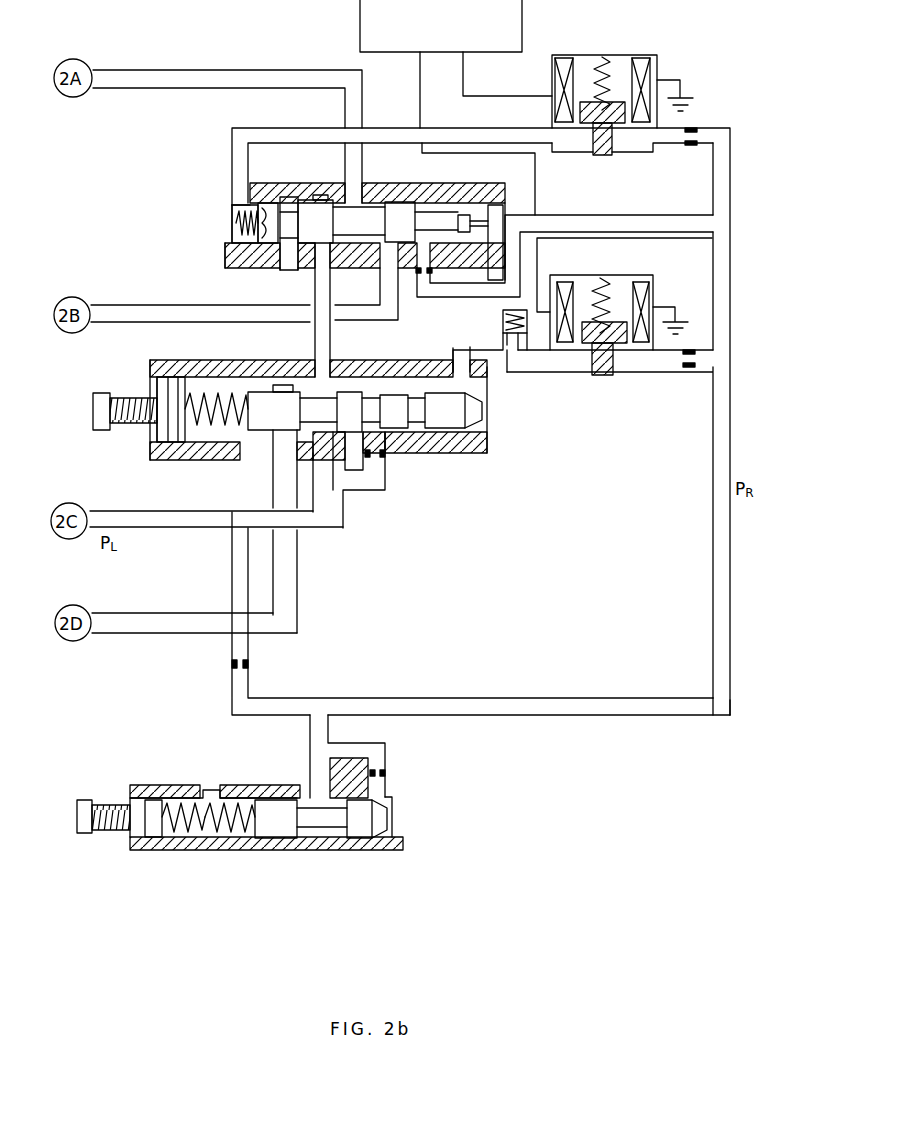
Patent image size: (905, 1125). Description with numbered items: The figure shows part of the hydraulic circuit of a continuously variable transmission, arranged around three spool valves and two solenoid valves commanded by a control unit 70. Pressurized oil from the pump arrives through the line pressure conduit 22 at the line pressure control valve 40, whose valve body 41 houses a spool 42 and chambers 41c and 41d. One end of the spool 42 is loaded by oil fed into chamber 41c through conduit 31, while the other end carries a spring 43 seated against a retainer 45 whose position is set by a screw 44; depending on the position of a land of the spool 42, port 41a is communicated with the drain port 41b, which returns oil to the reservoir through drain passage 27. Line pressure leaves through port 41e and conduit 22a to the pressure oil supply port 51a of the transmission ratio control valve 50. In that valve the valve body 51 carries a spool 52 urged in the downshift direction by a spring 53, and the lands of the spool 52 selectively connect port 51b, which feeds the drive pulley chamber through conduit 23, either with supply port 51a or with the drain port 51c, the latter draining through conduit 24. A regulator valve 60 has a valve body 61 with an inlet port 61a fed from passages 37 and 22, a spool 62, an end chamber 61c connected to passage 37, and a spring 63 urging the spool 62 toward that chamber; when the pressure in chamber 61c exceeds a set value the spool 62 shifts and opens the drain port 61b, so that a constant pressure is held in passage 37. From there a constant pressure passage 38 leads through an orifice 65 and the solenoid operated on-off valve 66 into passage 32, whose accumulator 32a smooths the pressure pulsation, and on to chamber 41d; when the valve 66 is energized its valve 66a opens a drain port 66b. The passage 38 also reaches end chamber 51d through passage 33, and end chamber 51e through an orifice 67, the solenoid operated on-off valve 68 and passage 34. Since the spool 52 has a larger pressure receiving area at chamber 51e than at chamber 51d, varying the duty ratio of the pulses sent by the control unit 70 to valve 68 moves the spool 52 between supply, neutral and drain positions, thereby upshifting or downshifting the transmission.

The control unit 70 is at (522, 22).
The conduit 23 is at (183, 70).
The passage 34 is at (461, 137).
The transmission ratio control valve 50 is at (474, 189).
The spring 53 is at (233, 208).
The end chamber 51e is at (237, 240).
The spool 52 is at (272, 202).
The port 51b is at (300, 194).
The pressure oil supply port 51a is at (290, 266).
The valve body 51 is at (397, 200).
The drain port 51c is at (366, 294).
The end chamber 51d is at (430, 277).
The conduit 24 is at (186, 312).
The conduit 22a is at (316, 296).
The solenoid operated on-off valve 68 is at (638, 55).
The orifice 67 is at (695, 125).
The passage 33 is at (618, 213).
The solenoid operated on-off valve 66 is at (648, 275).
The valve 66a is at (620, 345).
The drain port 66b is at (600, 377).
The orifice 65 is at (690, 370).
The passage 32 is at (525, 345).
The accumulator 32a is at (510, 362).
The line pressure control valve 40 is at (471, 475).
The screw 44 is at (100, 432).
The retainer 45 is at (172, 442).
The spring 43 is at (215, 385).
The port 41e is at (280, 388).
The spool 42 is at (349, 398).
The valve body 41 is at (437, 383).
The drain port 41b is at (283, 440).
The chamber 41c is at (383, 440).
The chamber 41d is at (468, 432).
The port 41a is at (345, 495).
The conduit 31 is at (380, 495).
The line pressure conduit 22 is at (142, 512).
The drain passage 27 is at (152, 618).
The passage 37 is at (280, 700).
The constant pressure passage 38 is at (712, 572).
The regulator valve 60 is at (420, 820).
The valve body 61 is at (182, 842).
The spring 63 is at (212, 795).
The spool 62 is at (275, 840).
The inlet port 61a is at (318, 795).
The drain port 61b is at (290, 860).
The end chamber 61c is at (388, 840).